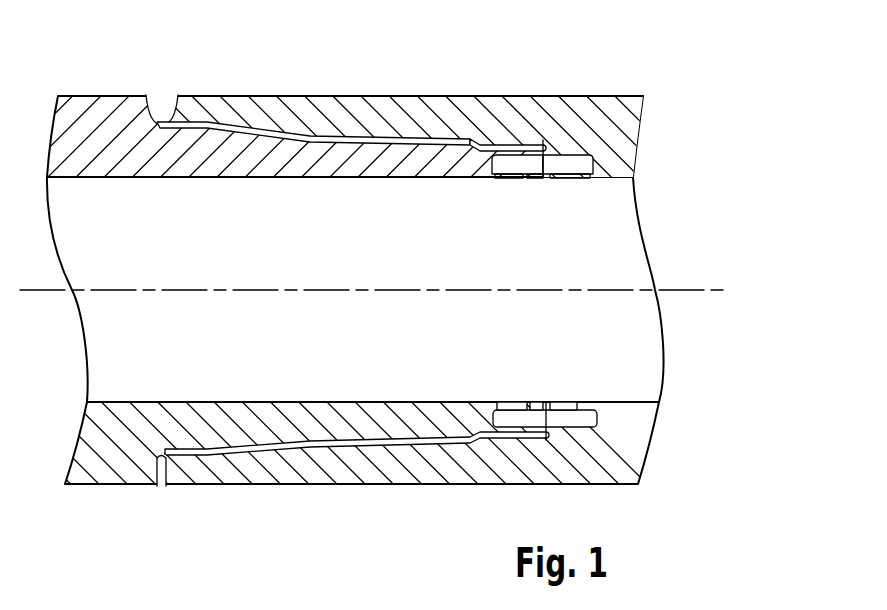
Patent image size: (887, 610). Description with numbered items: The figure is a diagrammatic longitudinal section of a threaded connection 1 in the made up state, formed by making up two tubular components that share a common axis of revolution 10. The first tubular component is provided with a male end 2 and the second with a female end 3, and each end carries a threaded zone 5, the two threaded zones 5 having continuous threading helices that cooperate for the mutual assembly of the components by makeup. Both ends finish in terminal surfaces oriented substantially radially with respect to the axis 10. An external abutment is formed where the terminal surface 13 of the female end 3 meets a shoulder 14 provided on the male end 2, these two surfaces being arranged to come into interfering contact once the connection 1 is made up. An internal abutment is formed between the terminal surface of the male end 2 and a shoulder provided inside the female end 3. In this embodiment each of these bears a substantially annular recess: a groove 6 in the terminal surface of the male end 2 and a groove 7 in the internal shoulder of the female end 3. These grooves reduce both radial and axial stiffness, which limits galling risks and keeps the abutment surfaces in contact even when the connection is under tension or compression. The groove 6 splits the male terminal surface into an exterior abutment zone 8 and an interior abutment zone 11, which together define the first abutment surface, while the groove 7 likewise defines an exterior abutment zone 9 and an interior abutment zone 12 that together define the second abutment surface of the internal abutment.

The threaded connection 1 is at (405, 50).
The male end 2 is at (102, 120).
The female end 3 is at (598, 116).
The threaded zones 5 is at (320, 142).
The groove 6 is at (514, 165).
The groove 7 is at (568, 165).
The exterior abutment zone 8 is at (514, 150).
The exterior abutment zone 9 is at (548, 150).
The axis of revolution 10 is at (682, 290).
The interior abutment zone 11 is at (527, 177).
The interior abutment zone 12 is at (555, 180).
The terminal surface 13 is at (175, 122).
The shoulder 14 is at (146, 94).